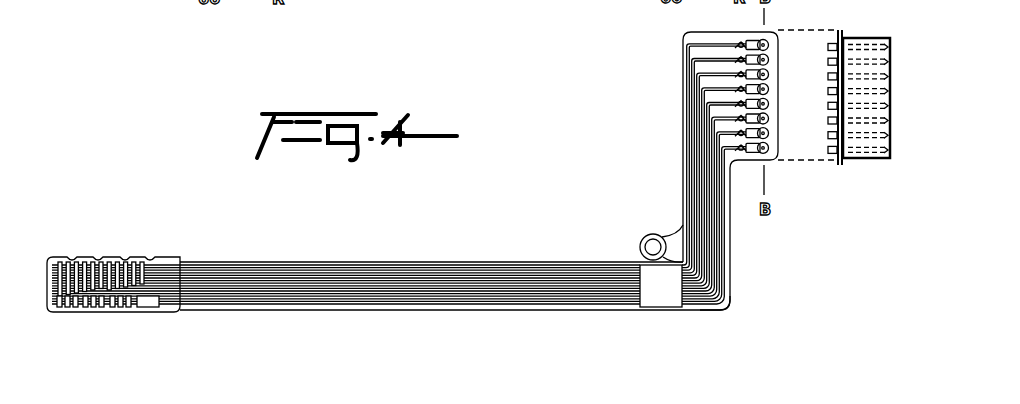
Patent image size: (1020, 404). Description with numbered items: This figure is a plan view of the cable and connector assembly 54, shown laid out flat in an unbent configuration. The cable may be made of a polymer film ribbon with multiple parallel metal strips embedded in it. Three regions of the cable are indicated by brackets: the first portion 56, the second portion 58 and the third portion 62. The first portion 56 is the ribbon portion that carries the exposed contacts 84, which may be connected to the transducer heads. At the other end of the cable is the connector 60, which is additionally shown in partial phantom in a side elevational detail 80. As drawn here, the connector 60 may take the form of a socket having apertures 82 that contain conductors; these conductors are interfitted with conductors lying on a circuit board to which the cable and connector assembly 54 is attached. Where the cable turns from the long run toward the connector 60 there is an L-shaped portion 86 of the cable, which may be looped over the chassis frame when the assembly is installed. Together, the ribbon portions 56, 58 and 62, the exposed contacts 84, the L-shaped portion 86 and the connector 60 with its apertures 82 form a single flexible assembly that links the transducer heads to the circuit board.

The cable and connector assembly 54 is at (348, 262).
The first portion of the cable 56 is at (192, 333).
The second portion of the cable 58 is at (675, 28).
The connector 60 is at (723, 30).
The third portion of the cable 62 is at (192, 333).
The side elevational detail 80 is at (860, 160).
The apertures 82 is at (890, 45).
The exposed contacts 84 is at (78, 310).
The L-shaped portion 86 is at (730, 302).